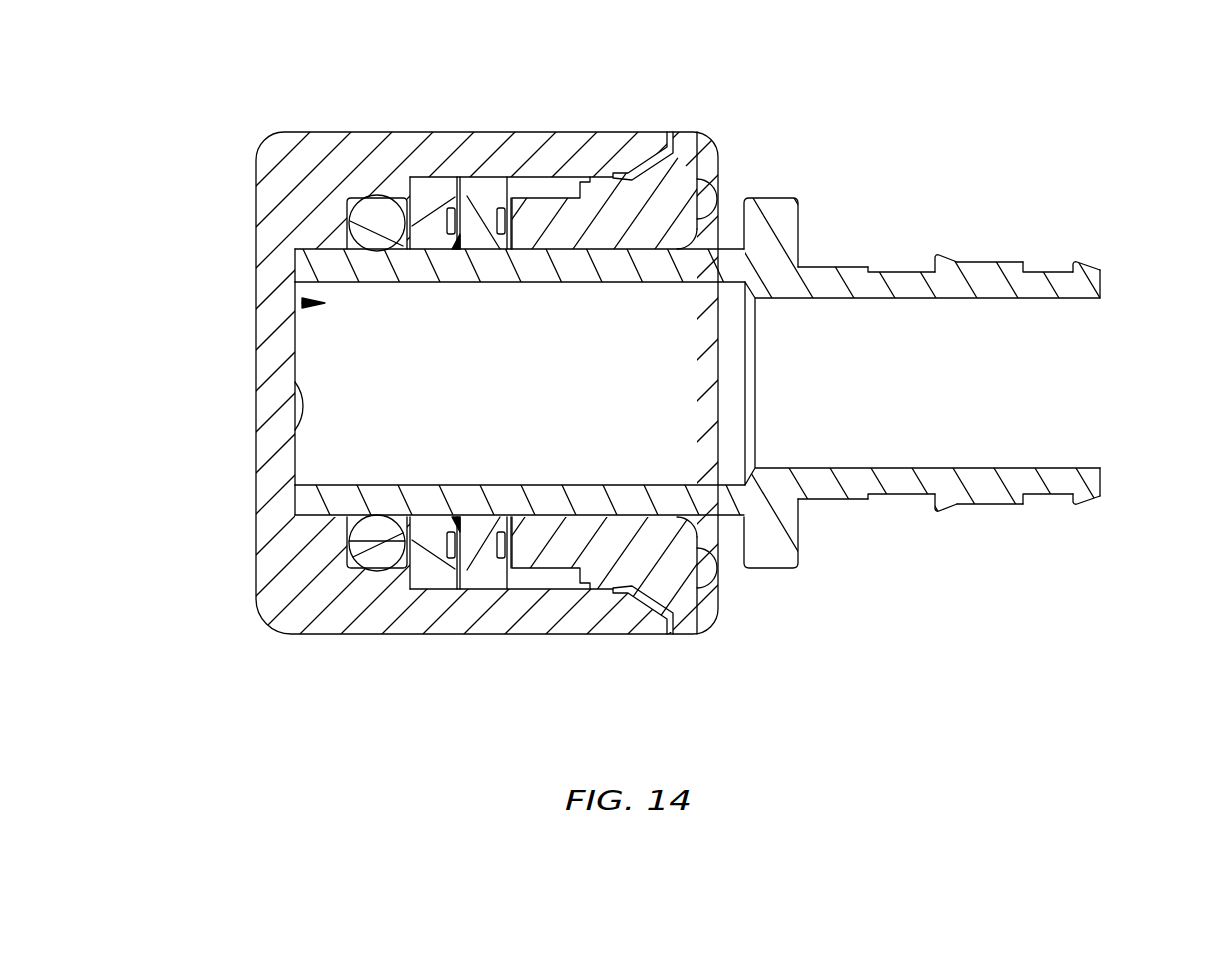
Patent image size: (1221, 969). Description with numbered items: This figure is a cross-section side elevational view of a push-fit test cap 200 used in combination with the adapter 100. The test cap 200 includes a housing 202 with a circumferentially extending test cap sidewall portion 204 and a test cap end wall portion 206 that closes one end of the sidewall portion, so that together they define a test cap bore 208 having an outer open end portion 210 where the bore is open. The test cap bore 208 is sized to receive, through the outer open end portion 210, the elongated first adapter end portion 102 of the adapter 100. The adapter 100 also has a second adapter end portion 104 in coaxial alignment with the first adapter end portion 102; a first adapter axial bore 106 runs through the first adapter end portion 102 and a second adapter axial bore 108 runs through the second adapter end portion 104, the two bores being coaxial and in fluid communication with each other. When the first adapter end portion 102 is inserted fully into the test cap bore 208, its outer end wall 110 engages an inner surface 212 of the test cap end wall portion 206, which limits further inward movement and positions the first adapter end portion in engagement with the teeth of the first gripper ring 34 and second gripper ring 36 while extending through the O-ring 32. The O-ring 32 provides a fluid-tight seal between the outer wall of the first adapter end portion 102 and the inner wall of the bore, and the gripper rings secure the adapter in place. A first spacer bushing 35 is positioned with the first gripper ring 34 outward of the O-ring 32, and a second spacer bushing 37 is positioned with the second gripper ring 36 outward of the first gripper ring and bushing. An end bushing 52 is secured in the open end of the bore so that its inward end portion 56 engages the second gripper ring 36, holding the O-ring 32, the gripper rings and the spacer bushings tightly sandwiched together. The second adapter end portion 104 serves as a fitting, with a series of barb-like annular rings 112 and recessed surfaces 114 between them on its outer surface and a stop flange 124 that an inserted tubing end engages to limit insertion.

The adapter 100 is at (672, 345).
The first adapter end portion 102 is at (446, 363).
The second adapter end portion 104 is at (825, 265).
The first adapter axial bore 106 is at (375, 542).
The second adapter axial bore 108 is at (1060, 468).
The outer end wall 110 is at (297, 267).
The annular rings 112 is at (833, 502).
The recessed surfaces 114 is at (903, 495).
The stop flange 124 is at (777, 210).
The test cap 200 is at (606, 358).
The housing 202 is at (603, 637).
The test cap sidewall portion 204 is at (613, 396).
The test cap end wall portion 206 is at (277, 392).
The test cap bore 208 is at (300, 303).
The outer open end portion 210 is at (648, 617).
The inner surface 212 is at (277, 430).
The O-ring 32 is at (357, 570).
The first gripper ring 34 is at (462, 562).
The first spacer bushing 35 is at (420, 570).
The second gripper ring 36 is at (515, 562).
The second spacer bushing 37 is at (508, 575).
The end bushing 52 is at (685, 572).
The inward end portion 56 is at (537, 217).